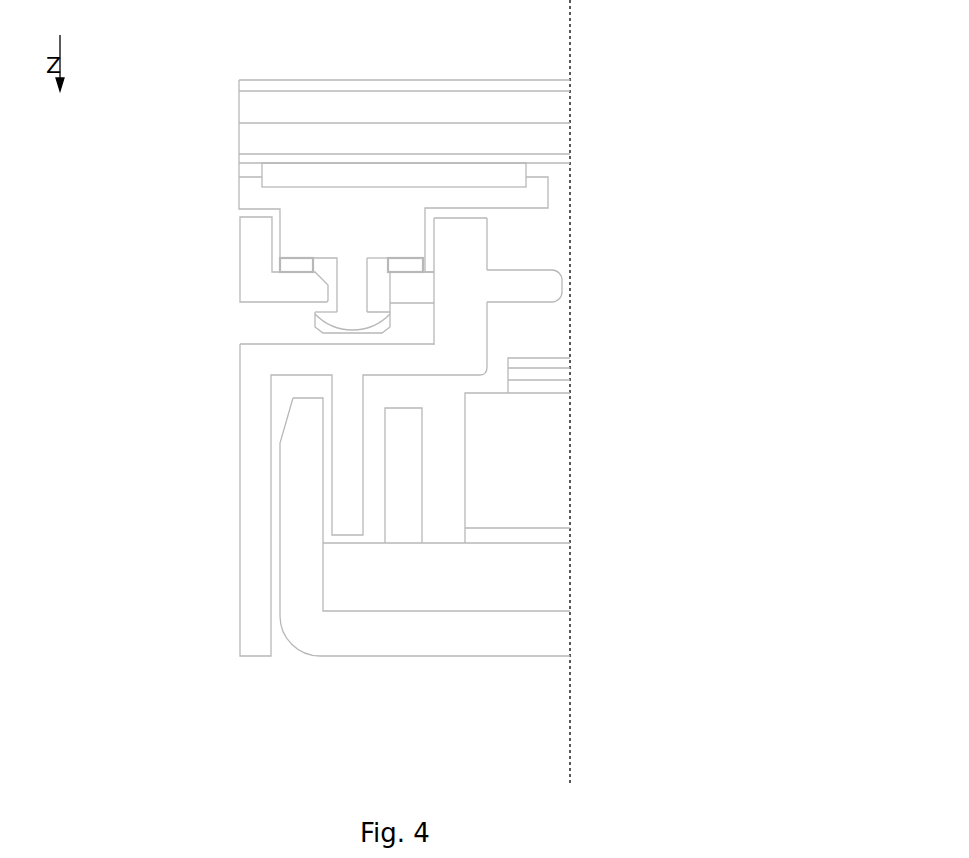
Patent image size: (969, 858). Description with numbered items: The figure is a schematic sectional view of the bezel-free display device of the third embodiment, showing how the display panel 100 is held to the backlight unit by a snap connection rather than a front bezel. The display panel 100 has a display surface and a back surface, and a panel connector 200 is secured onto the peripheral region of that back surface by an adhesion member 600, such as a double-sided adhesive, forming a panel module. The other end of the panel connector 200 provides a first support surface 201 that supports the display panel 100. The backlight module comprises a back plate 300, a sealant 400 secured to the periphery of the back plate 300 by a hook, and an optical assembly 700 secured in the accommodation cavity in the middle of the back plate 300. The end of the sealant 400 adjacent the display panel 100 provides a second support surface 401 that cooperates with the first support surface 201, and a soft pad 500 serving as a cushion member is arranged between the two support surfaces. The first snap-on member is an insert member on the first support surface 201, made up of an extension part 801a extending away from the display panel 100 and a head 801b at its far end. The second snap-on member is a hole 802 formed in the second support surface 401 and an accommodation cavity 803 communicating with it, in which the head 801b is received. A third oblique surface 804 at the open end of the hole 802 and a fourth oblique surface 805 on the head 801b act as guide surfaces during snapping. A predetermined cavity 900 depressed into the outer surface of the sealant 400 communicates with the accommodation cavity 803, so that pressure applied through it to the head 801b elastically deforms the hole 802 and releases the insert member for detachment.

The display panel 100 is at (268, 117).
The adhesion member 600 is at (450, 173).
The panel connector 200 is at (268, 198).
The first support surface 201 is at (381, 258).
The second support surface 401 is at (283, 275).
The pad 500 is at (407, 265).
The extension part 801a is at (352, 281).
The head 801b is at (343, 318).
The predetermined cavity 900 is at (270, 327).
The fourth oblique surface 805 is at (322, 333).
The hole 802 is at (373, 295).
The third oblique surface 804 is at (378, 277).
The accommodation cavity 803 is at (398, 327).
The sealant 400 is at (255, 460).
The back plate 300 is at (297, 600).
The optical assembly 700 is at (546, 458).